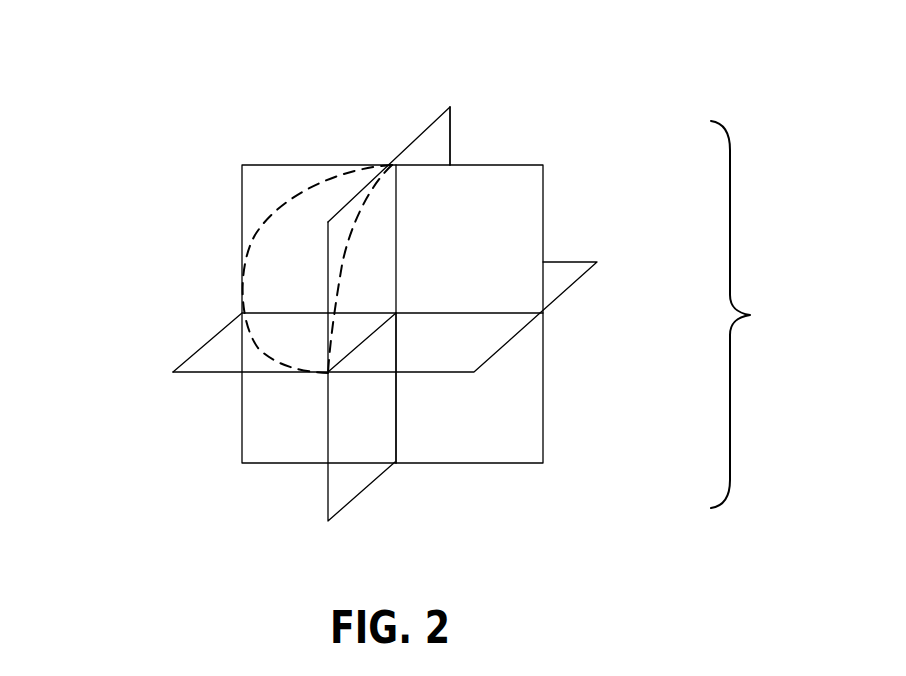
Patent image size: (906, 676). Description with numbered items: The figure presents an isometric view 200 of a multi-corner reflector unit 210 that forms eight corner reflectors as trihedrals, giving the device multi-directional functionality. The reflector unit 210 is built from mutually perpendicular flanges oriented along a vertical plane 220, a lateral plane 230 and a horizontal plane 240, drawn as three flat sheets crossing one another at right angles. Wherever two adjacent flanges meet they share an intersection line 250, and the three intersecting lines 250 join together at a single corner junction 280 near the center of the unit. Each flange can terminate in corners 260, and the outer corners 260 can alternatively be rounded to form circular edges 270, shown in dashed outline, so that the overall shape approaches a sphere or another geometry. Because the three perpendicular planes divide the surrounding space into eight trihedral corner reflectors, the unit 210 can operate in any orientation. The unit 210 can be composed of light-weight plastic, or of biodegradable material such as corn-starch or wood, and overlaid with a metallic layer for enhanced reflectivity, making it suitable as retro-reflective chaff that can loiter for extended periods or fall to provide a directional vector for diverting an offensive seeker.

The isometric view 200 is at (118, 170).
The multi-corner reflector unit 210 is at (755, 314).
The vertical plane 220 is at (510, 165).
The lateral plane 230 is at (421, 138).
The horizontal plane 240 is at (575, 285).
The intersection line 250 is at (395, 418).
The corner 260 is at (450, 107).
The rounded edge 270 is at (347, 248).
The corner junction 280 is at (405, 298).